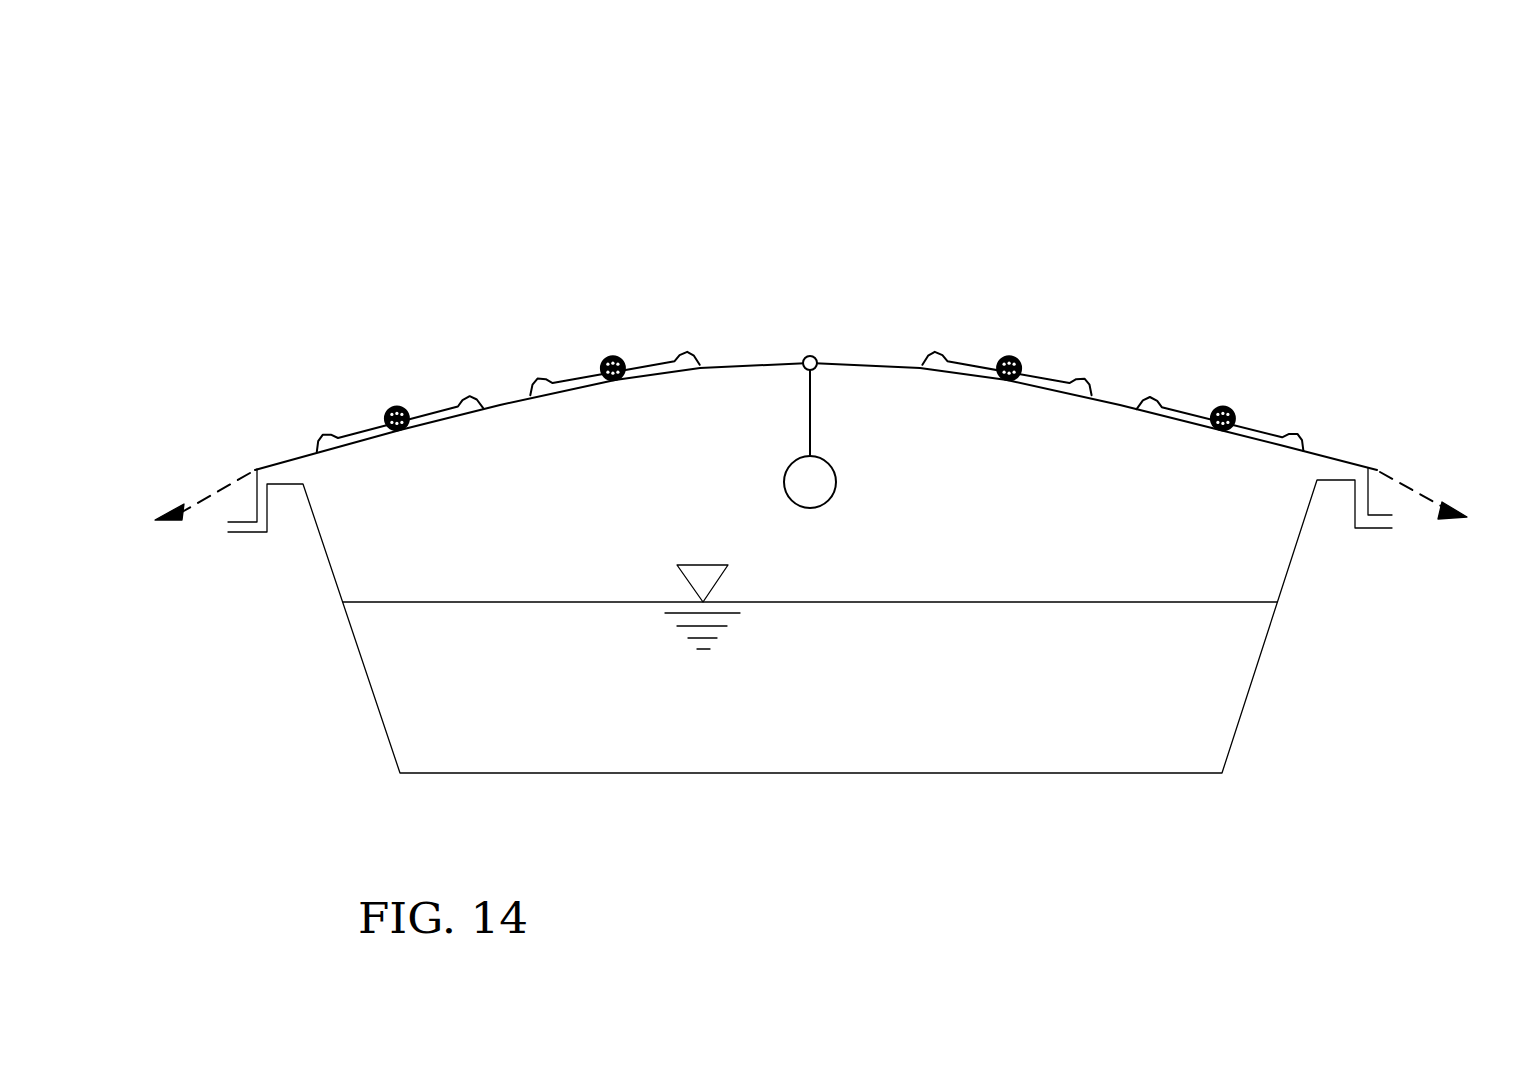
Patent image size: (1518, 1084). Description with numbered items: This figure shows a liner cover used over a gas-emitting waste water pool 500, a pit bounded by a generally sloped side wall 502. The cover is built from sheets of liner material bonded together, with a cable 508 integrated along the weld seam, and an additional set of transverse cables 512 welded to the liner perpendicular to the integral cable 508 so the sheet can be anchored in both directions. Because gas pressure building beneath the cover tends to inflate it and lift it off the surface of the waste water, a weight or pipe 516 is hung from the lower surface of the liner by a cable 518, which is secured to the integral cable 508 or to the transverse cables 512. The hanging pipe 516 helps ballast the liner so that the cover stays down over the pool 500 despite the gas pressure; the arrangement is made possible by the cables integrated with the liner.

The waste water pool 500 is at (1277, 238).
The sloped side wall 502 is at (373, 695).
The cable 508 is at (1395, 480).
The transverse cables 512 is at (1177, 402).
The weight or pipe 516 is at (836, 490).
The cable 518 is at (810, 430).